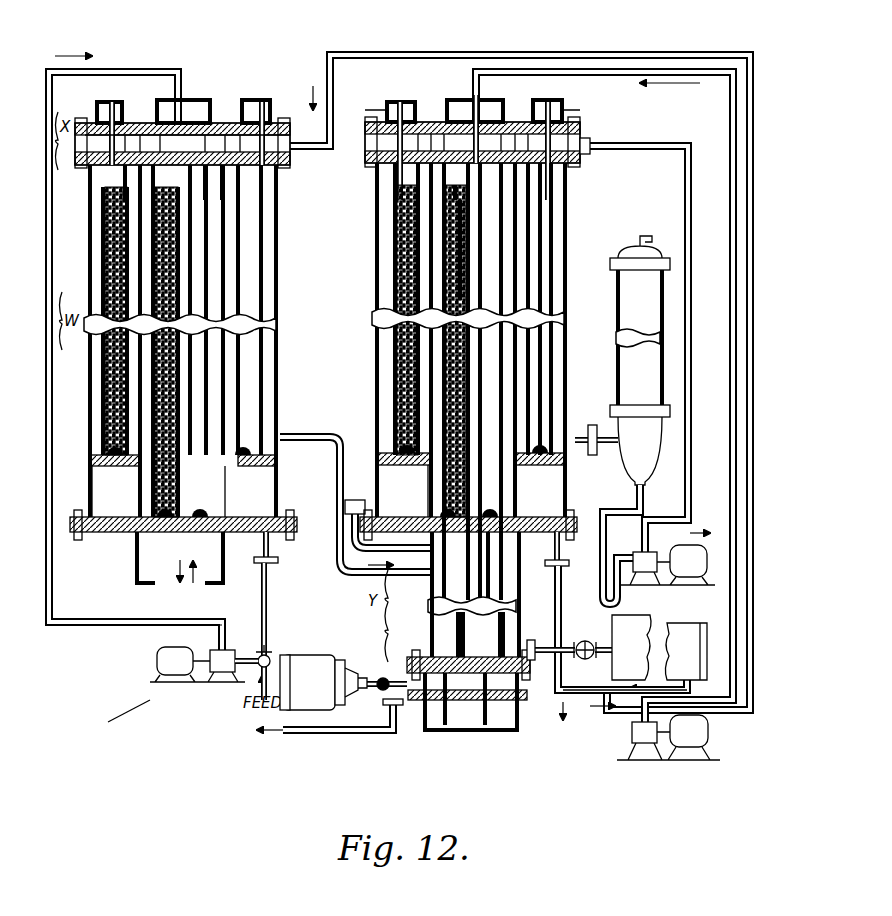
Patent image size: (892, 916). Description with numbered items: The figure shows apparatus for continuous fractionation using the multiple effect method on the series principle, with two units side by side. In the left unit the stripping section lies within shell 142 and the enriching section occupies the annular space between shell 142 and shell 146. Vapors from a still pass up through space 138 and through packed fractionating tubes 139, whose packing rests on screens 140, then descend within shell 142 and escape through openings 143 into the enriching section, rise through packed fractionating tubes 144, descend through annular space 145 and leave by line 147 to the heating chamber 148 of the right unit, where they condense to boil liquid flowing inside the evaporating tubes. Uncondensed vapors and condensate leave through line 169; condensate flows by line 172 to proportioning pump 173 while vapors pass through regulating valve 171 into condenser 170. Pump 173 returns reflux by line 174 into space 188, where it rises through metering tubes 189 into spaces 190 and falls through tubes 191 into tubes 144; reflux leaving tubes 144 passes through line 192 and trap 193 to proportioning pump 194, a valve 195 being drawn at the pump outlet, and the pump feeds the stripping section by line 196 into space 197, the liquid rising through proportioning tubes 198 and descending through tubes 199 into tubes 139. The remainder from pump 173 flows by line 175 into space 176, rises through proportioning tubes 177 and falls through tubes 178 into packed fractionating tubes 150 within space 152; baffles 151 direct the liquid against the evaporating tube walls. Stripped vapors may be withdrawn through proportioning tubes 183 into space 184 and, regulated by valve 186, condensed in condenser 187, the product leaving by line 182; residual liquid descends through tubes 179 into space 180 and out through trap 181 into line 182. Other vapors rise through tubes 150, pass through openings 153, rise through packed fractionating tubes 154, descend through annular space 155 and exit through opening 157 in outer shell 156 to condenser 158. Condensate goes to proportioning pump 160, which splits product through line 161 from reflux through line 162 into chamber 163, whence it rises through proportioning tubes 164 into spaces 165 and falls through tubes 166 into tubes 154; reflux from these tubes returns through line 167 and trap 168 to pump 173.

The space 138 is at (146, 562).
The packed fractionating tubes 139 is at (197, 522).
The screens 140 is at (163, 522).
The shell 142 is at (145, 487).
The openings 143 is at (226, 490).
The packed fractionating tubes 144 is at (246, 372).
The annular space 145 is at (272, 202).
The shell 146 is at (280, 386).
The line 147 is at (334, 436).
The heating chamber 148 is at (434, 628).
The packed fractionating tubes 150 is at (468, 484).
The baffles 151 is at (458, 528).
The space 152 is at (480, 196).
The openings 153 is at (428, 490).
The packed fractionating tubes 154 is at (388, 424).
The annular space 155 is at (577, 202).
The outer shell 156 is at (566, 362).
The opening 157 is at (586, 428).
The condenser 158 is at (614, 441).
The proportioning pump 160 is at (667, 565).
The line 161 is at (656, 524).
The line 162 is at (690, 472).
The chamber 163 is at (586, 142).
The proportioning tubes 164 is at (387, 114).
The spaces 165 is at (402, 106).
The tubes 166 is at (398, 152).
The line 167 is at (564, 552).
The trap 168 is at (565, 576).
The line 169 is at (522, 648).
The condenser 170 is at (659, 647).
The regulating valve 171 is at (586, 640).
The line 172 is at (584, 686).
The proportioning pump 173 is at (636, 732).
The line 174 is at (345, 52).
The line 175 is at (590, 68).
The space 176 is at (472, 142).
The proportioning tubes 177 is at (478, 104).
The tubes 178 is at (466, 196).
The tubes 179 is at (448, 708).
The space 180 is at (478, 732).
The trap 181 is at (385, 710).
The line 182 is at (300, 734).
The proportioning tubes 183 is at (489, 528).
The space 184 is at (468, 670).
The valve 186 is at (384, 678).
The condenser 187 is at (323, 682).
The space 188 is at (270, 136).
The metering tubes 189 is at (110, 110).
The spaces 190 is at (118, 110).
The tubes 191 is at (260, 178).
The line 192 is at (275, 553).
The trap 193 is at (272, 582).
The proportioning pump 194 is at (222, 672).
The valve 195 is at (268, 656).
The line 196 is at (115, 626).
The space 197 is at (182, 143).
The proportioning tubes 198 is at (182, 100).
The tubes 199 is at (172, 204).